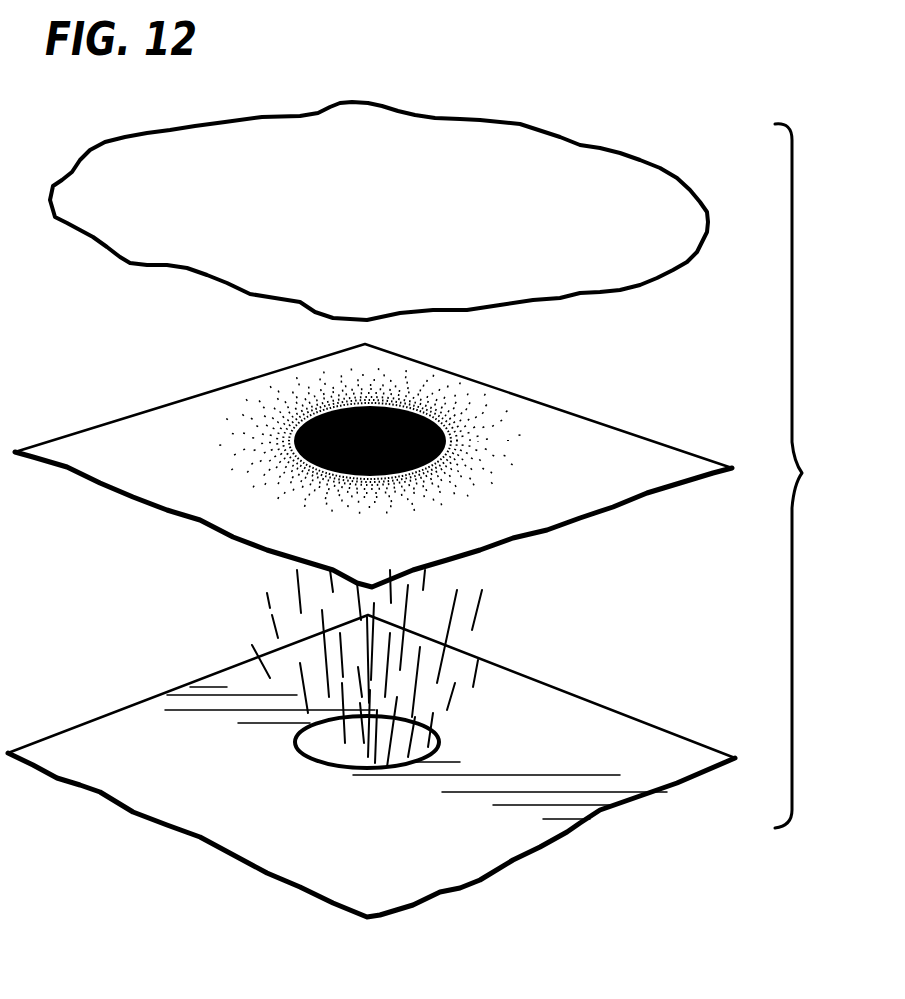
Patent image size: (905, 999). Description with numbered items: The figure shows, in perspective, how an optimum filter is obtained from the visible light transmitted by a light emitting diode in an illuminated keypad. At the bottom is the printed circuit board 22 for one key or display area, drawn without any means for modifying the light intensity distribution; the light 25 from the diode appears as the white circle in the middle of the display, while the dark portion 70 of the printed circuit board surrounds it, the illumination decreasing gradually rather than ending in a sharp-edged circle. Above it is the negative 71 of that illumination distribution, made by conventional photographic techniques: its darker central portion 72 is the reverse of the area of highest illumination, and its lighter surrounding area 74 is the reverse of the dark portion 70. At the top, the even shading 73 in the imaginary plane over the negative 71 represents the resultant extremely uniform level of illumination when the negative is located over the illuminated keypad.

The printed circuit board 22 is at (160, 695).
The light 25 is at (335, 753).
The dark portion of the printed circuit board 70 is at (497, 708).
The negative 71 is at (637, 435).
The darker central portion 72 is at (297, 415).
The even shading 73 is at (518, 162).
The lighter surrounding area 74 is at (475, 403).